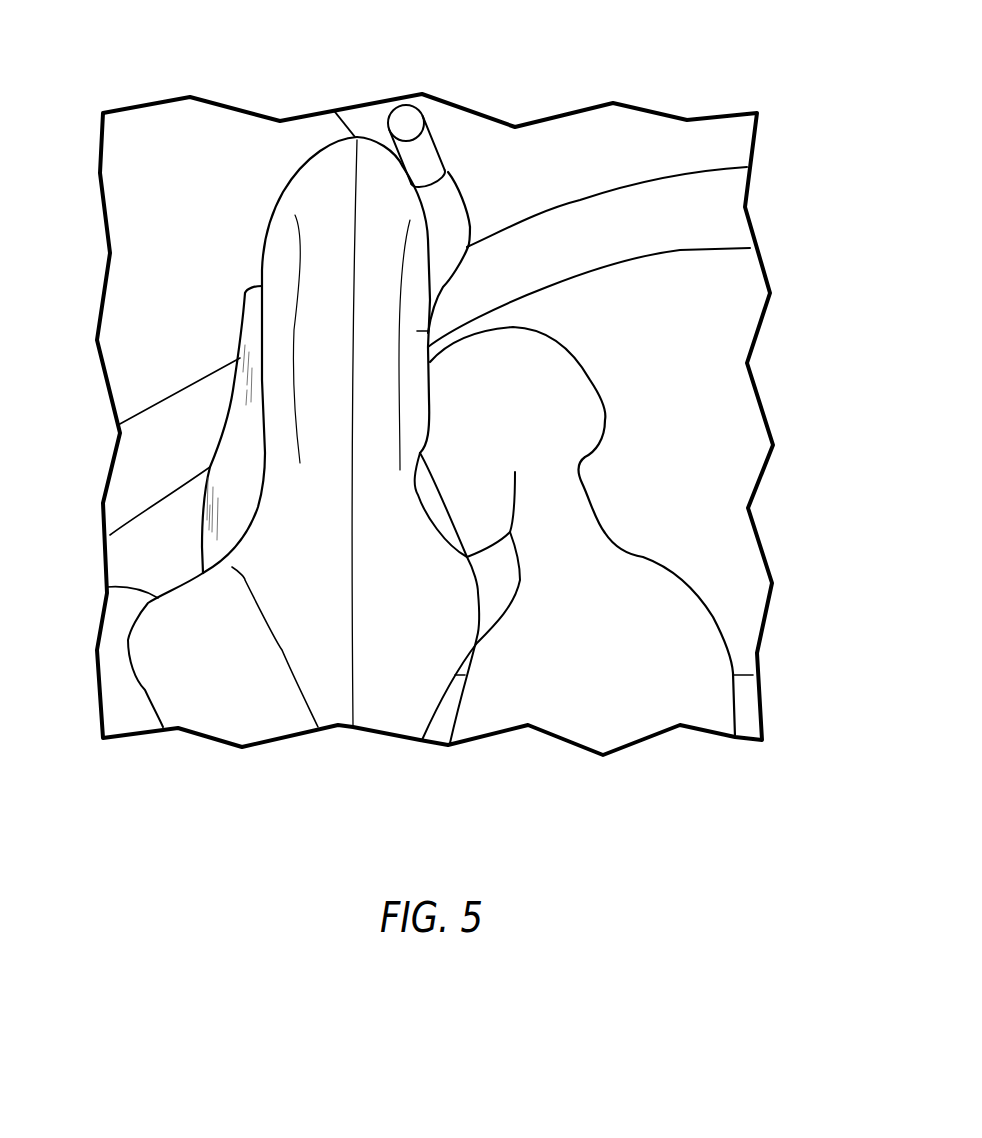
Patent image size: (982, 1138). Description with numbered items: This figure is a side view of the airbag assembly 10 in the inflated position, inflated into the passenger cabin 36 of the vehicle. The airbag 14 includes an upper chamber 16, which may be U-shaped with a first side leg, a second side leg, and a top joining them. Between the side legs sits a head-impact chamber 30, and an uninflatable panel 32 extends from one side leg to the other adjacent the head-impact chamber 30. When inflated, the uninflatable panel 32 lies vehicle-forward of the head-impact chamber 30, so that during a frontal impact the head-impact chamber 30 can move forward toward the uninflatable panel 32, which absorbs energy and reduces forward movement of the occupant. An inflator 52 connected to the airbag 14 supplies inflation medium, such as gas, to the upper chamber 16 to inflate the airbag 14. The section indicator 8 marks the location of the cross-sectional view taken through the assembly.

The airbag assembly 10 is at (297, 75).
The airbag 14 is at (283, 192).
The upper chamber 16 is at (432, 330).
The head-impact chamber 30 is at (443, 525).
The uninflatable panel 32 is at (227, 425).
The passenger cabin 36 is at (710, 353).
The inflator 52 is at (437, 135).
The section line 8 is at (228, 320).